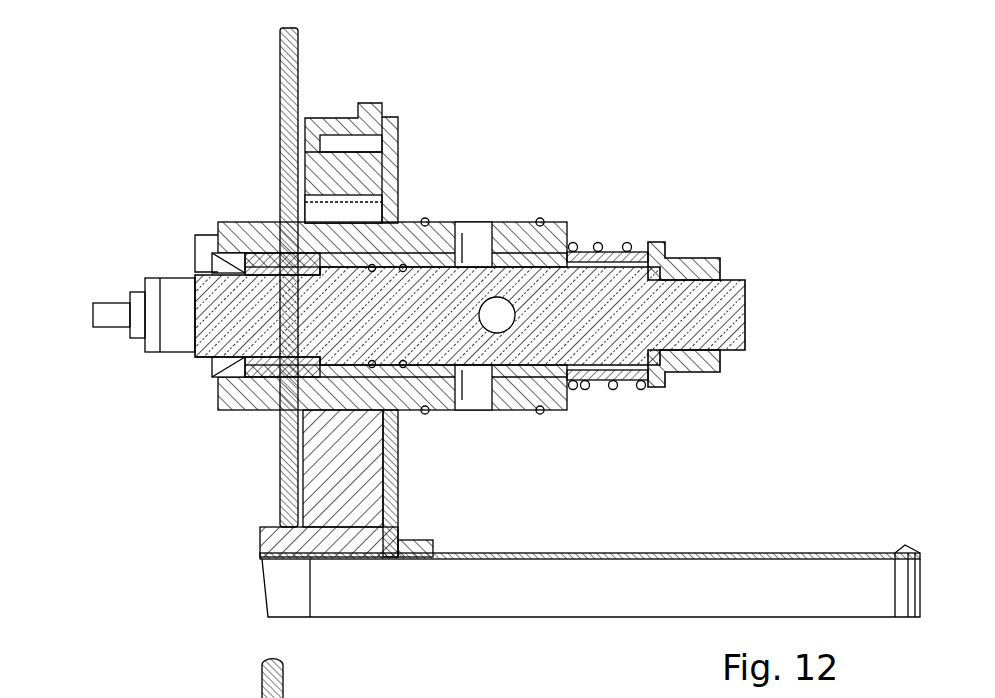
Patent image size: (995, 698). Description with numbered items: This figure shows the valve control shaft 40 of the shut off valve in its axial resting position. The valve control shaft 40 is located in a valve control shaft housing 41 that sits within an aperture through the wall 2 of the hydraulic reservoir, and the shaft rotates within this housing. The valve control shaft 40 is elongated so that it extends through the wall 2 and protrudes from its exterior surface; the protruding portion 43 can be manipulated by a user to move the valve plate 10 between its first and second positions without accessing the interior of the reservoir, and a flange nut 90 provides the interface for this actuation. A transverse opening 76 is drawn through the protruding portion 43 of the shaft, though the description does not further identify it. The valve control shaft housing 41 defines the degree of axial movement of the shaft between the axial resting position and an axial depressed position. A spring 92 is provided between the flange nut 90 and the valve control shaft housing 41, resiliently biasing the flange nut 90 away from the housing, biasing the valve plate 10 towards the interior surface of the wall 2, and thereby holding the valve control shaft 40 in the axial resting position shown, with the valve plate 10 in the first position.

The wall 2 is at (355, 130).
The valve plate 10 is at (280, 160).
The valve control shaft 40 is at (640, 247).
The valve control shaft housing 41 is at (598, 247).
The protruding portion of the valve control shaft 43 is at (742, 330).
The cross bore 76 is at (497, 296).
The flange nut 90 is at (683, 280).
The spring 92 is at (573, 246).